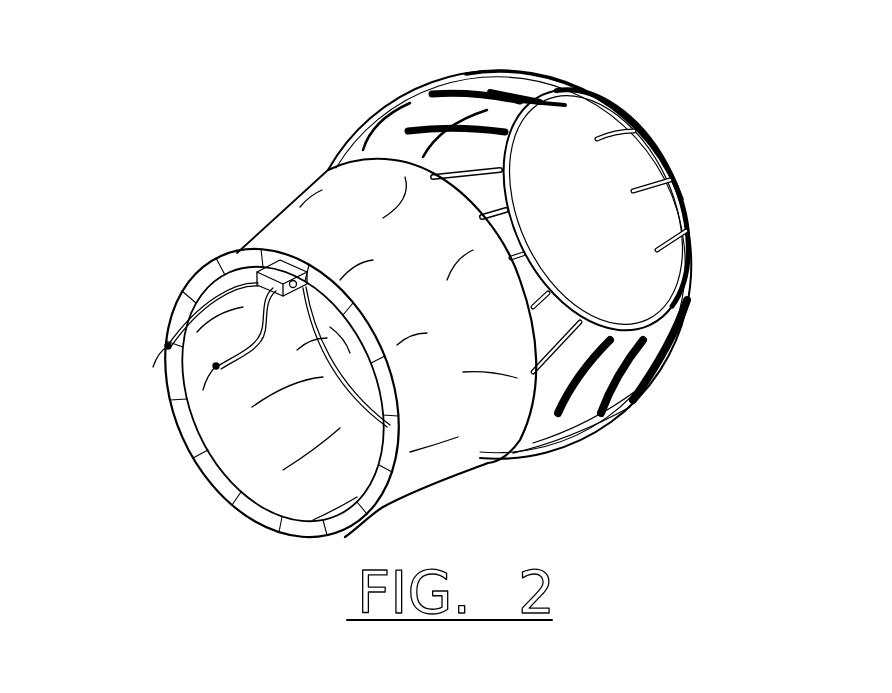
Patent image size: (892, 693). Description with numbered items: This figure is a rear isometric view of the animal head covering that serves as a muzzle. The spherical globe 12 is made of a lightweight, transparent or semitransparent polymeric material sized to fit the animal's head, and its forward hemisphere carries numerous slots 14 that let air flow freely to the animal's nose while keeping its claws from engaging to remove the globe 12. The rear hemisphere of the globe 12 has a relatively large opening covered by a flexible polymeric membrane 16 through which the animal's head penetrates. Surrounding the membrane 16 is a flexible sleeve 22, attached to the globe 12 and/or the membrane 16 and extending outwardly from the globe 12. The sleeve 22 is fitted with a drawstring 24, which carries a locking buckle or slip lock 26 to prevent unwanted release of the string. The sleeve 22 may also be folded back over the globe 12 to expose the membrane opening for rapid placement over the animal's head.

The globe 12 is at (628, 405).
The slots 14 is at (527, 273).
The flexible polymeric membrane 16 is at (350, 353).
The flexible sleeve 22 is at (452, 478).
The drawstring 24 is at (203, 317).
The locking buckle or slip lock 26 is at (287, 262).